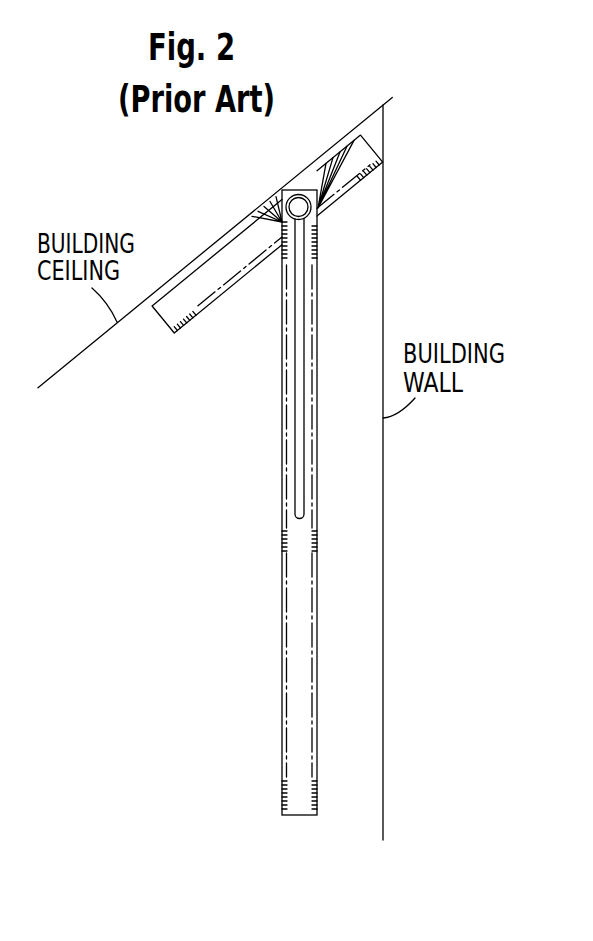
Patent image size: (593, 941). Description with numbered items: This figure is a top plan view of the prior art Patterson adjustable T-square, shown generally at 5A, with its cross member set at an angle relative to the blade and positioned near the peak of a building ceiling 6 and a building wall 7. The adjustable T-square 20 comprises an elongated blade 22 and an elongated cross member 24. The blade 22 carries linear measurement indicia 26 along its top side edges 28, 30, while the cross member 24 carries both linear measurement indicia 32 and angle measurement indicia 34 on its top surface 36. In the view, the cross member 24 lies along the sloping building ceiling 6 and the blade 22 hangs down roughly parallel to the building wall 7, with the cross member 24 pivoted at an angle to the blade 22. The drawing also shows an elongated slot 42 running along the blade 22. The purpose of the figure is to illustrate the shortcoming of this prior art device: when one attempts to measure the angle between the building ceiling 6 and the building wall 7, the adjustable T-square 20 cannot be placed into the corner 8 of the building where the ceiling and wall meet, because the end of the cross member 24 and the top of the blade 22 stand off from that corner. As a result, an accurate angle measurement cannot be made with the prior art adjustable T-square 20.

The adjustable T-square of the prior art (general designation) 5A is at (338, 78).
The corner of the building 8 is at (392, 97).
The building wall 7 is at (383, 495).
The building ceiling 6 is at (197, 258).
The top surface 36 is at (231, 271).
The linear measurement indicia 32 is at (186, 331).
The angle measurement indicia 34 is at (262, 222).
The elongated cross member 24 is at (351, 193).
The adjustable T-square 20 is at (281, 644).
The elongated slot 42 is at (296, 370).
The elongated blade 22 is at (321, 672).
The top side edge 28 is at (282, 567).
The top side edge 30 is at (318, 593).
The linear measurement indicia 26 is at (323, 792).